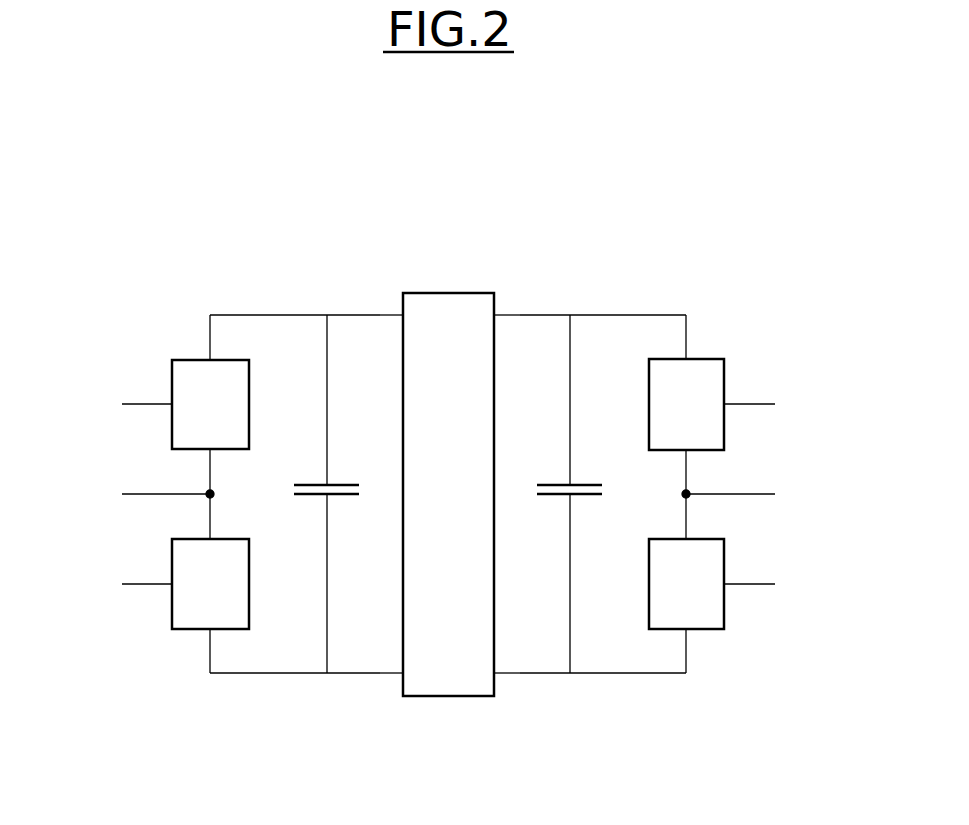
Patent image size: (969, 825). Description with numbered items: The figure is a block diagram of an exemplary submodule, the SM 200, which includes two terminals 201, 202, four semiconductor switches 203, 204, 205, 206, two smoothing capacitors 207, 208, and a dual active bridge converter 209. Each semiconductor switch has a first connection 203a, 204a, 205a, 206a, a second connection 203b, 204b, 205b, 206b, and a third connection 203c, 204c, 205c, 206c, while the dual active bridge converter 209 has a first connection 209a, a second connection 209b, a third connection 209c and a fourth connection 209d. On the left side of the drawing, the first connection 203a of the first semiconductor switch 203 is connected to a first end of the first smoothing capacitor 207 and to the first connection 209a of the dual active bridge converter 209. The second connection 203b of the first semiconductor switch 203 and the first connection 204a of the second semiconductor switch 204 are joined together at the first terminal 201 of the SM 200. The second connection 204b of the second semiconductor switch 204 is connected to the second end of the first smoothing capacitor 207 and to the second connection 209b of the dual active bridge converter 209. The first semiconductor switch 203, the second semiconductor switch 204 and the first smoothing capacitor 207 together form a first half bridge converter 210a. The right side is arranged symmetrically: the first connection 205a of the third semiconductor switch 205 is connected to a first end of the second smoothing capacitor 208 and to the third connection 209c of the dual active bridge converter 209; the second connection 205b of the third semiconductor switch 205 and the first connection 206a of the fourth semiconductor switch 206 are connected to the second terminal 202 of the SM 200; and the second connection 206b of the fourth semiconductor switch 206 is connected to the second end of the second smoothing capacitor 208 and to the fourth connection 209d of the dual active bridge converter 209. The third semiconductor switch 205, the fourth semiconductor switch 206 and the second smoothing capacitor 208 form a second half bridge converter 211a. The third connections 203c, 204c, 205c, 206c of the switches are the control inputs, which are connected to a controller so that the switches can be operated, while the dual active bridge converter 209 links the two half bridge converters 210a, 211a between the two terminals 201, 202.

The SM 200 is at (462, 203).
The first terminal 201 is at (122, 494).
The second terminal 202 is at (775, 494).
The first semiconductor switch 203 is at (142, 404).
The first connection 203a is at (208, 359).
The second connection 203b is at (209, 451).
The third connection 203c is at (122, 404).
The second semiconductor switch 204 is at (142, 583).
The first connection 204a is at (209, 538).
The second connection 204b is at (208, 630).
The third connection 204c is at (122, 584).
The third semiconductor switch 205 is at (755, 404).
The first connection 205a is at (687, 359).
The second connection 205b is at (687, 451).
The third connection 205c is at (775, 404).
The fourth semiconductor switch 206 is at (755, 583).
The first connection 206a is at (687, 538).
The second connection 206b is at (687, 632).
The third connection 206c is at (775, 584).
The first smoothing capacitor 207 is at (356, 462).
The second smoothing capacitor 208 is at (541, 462).
The dual active bridge converter 209 is at (449, 496).
The first connection 209a is at (402, 315).
The second connection 209b is at (403, 675).
The third connection 209c is at (495, 315).
The fourth connection 209d is at (496, 675).
The first half bridge converter 210a is at (229, 267).
The second half bridge converter 211a is at (670, 268).